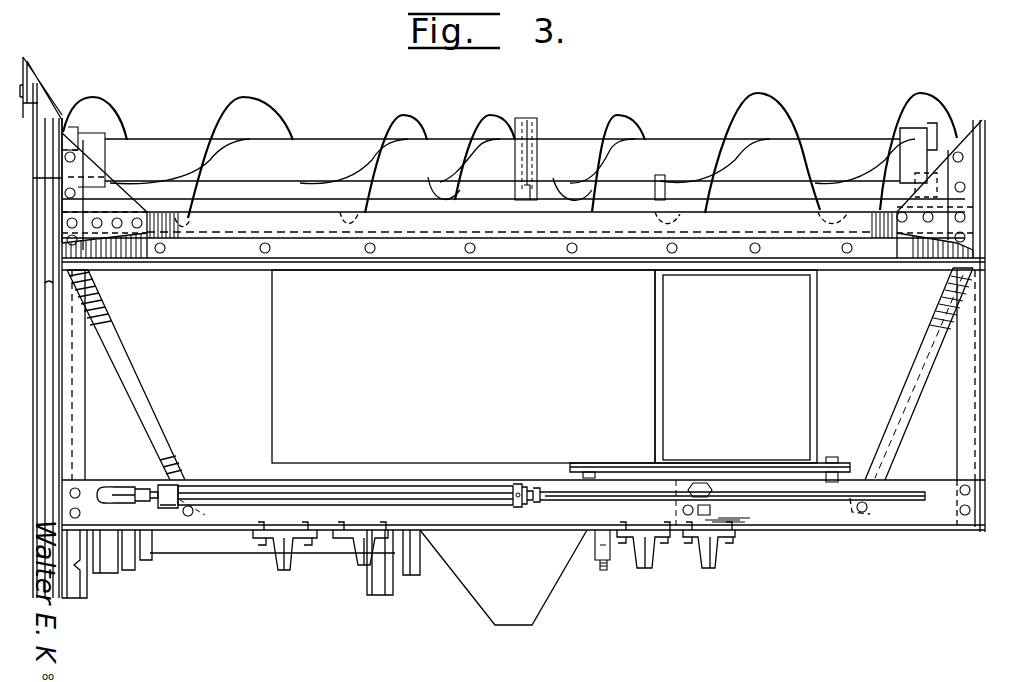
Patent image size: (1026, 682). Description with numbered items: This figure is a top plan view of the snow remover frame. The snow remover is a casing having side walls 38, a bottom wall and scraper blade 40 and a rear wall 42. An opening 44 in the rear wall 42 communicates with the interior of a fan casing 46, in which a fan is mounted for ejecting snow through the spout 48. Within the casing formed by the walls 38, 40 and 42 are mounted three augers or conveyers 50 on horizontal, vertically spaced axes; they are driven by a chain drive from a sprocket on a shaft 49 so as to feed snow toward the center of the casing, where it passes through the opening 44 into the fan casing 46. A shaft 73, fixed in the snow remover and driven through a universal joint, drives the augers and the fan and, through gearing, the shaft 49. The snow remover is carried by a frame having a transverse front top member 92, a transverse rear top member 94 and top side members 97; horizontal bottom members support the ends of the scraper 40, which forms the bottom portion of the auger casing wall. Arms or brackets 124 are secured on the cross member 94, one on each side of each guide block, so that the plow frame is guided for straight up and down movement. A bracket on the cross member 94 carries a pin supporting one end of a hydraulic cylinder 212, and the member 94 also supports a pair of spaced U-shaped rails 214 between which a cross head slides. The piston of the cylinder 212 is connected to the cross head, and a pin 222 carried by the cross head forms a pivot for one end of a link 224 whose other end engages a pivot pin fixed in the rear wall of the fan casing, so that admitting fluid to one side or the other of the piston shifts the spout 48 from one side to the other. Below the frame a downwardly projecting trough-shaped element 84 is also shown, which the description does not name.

The side walls 38 is at (975, 207).
The bottom wall and scraper blade 40 is at (300, 182).
The rear wall 42 is at (899, 257).
The opening 44 is at (620, 260).
The fan casing 46 is at (280, 327).
The spout 48 is at (800, 355).
The shaft 49 is at (219, 543).
The augers or conveyers 50 is at (676, 160).
The shaft 73 is at (603, 552).
The discharge trough 84 is at (492, 592).
The transverse front top member 92 is at (215, 256).
The transverse rear top member 94 is at (925, 508).
The top side members 97 is at (962, 448).
The arms or brackets 124 is at (300, 568).
The hydraulic cylinder 212 is at (224, 492).
The U-shaped rails 214 is at (800, 505).
The pin 222 is at (836, 463).
The link 224 is at (650, 465).